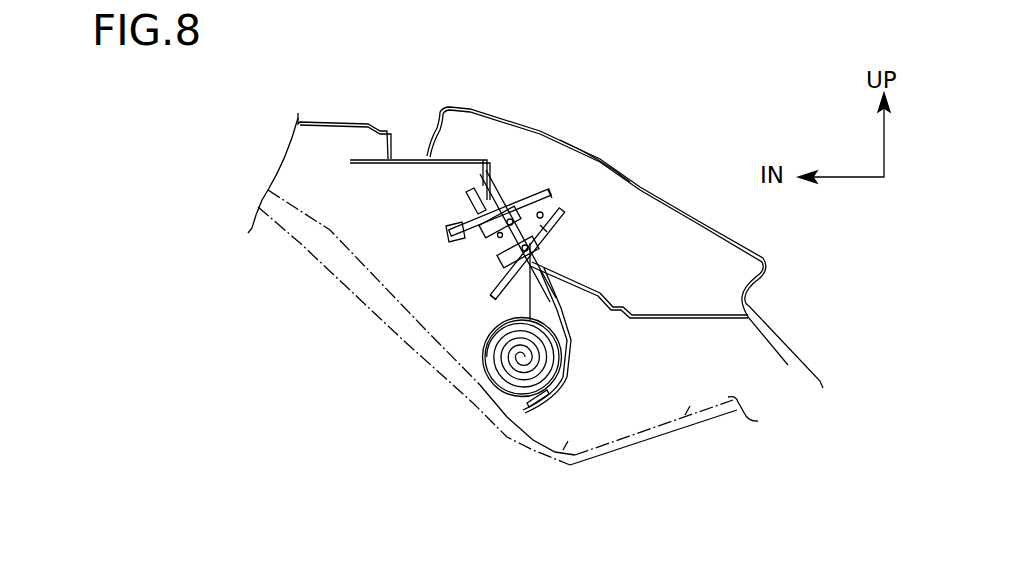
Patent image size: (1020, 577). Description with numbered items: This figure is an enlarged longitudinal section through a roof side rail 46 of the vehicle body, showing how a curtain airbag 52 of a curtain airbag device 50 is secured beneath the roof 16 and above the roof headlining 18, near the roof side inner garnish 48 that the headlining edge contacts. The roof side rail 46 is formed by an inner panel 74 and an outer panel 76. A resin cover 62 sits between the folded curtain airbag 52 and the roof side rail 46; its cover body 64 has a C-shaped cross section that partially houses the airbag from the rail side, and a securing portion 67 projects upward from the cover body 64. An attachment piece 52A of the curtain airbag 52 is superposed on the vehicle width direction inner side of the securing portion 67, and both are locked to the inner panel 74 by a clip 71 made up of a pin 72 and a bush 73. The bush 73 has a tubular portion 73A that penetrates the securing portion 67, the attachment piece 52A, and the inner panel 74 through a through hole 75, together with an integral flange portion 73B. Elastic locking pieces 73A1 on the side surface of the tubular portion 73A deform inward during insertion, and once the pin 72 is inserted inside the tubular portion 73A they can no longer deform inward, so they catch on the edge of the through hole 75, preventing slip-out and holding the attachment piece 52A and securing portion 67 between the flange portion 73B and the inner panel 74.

The roof 16 is at (330, 120).
The roof headlining 18 is at (300, 252).
The roof side rail 46 is at (643, 182).
The roof side inner garnish 48 is at (667, 442).
The curtain airbag device 50 is at (441, 302).
The curtain airbag 52 is at (487, 343).
The attachment piece 52A is at (410, 159).
The resin cover 62 is at (566, 291).
The cover body 64 is at (567, 358).
The securing portion 67 is at (467, 210).
The clip 71 is at (450, 244).
The pin 72 is at (475, 245).
The bush 73 is at (463, 230).
The tubular portion 73A is at (537, 190).
The elastic locking piece 73A1 is at (547, 228).
The flange portion 73B is at (493, 257).
The inner panel 74 is at (672, 313).
The through hole 75 is at (497, 193).
The outer panel 76 is at (557, 138).